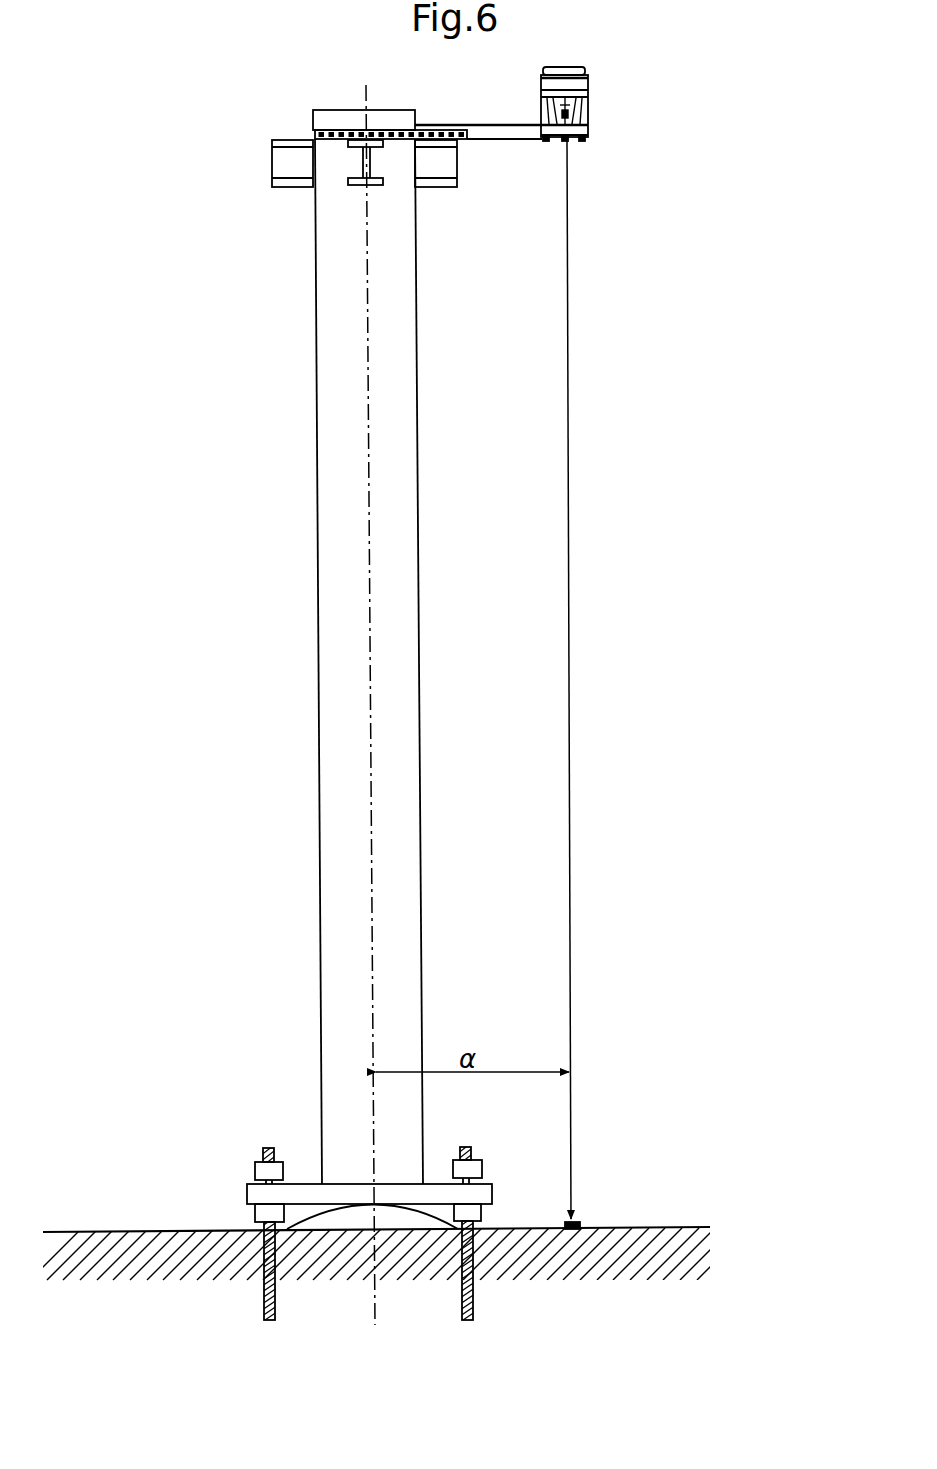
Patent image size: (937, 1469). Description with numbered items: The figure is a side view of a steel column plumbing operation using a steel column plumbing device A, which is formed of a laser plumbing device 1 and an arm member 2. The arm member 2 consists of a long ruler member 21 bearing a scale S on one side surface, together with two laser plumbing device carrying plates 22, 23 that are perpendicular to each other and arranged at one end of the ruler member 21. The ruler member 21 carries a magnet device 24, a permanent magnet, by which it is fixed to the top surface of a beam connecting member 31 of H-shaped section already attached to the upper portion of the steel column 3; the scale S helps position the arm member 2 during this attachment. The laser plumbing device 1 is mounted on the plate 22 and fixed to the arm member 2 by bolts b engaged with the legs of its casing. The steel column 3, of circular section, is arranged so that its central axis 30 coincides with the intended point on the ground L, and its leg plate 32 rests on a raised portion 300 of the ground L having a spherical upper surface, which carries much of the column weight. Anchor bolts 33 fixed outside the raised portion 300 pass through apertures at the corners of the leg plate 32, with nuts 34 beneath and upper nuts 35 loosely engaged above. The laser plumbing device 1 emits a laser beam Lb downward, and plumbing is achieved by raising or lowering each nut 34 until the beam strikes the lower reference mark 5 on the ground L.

The laser plumbing device 1 is at (594, 116).
The arm member 2 is at (478, 121).
The ruler member 21 is at (493, 139).
The laser plumbing device carrying plate 22 is at (590, 130).
The laser plumbing device carrying plate 23 is at (589, 89).
The magnet device 24 is at (349, 128).
The steel column 3 is at (314, 467).
The central axis 30 is at (367, 372).
The beam connecting member 31 is at (285, 186).
The leg plate 32 is at (305, 1190).
The anchor bolt 33 is at (263, 1313).
The nut 34 is at (256, 1216).
The upper nut 35 is at (257, 1168).
The raised portion 300 is at (357, 1212).
The lower reference mark 5 is at (582, 1226).
The scale S is at (447, 130).
The ground L is at (77, 1250).
The laser beam Lb is at (572, 490).
The bolt b is at (563, 142).
The steel column plumbing device A is at (662, 117).